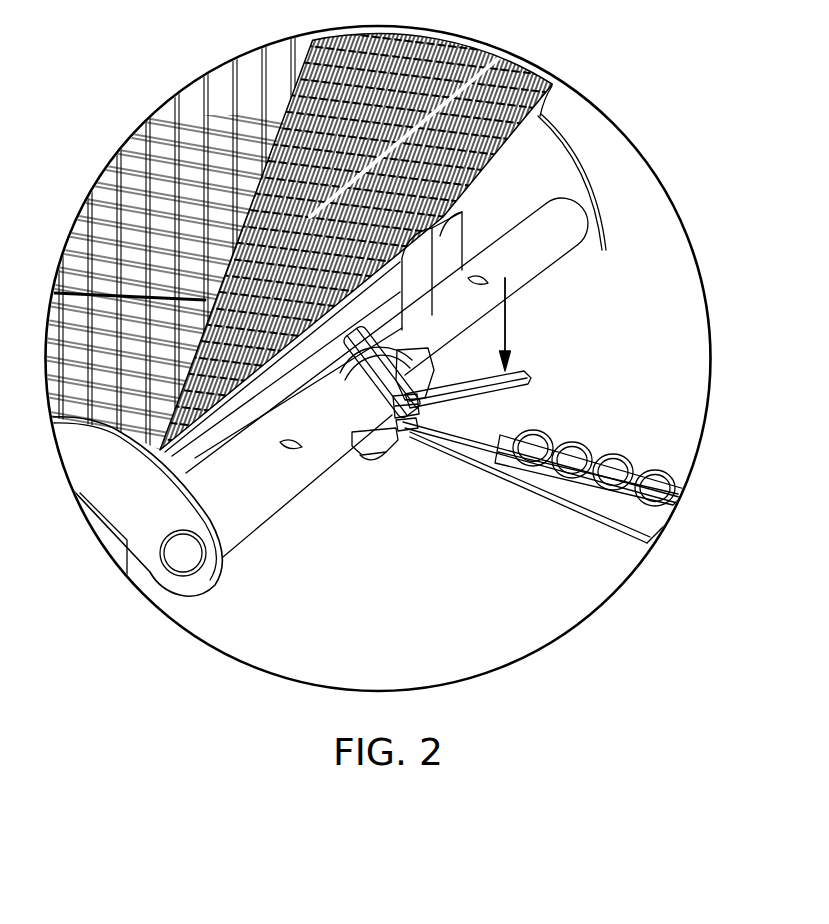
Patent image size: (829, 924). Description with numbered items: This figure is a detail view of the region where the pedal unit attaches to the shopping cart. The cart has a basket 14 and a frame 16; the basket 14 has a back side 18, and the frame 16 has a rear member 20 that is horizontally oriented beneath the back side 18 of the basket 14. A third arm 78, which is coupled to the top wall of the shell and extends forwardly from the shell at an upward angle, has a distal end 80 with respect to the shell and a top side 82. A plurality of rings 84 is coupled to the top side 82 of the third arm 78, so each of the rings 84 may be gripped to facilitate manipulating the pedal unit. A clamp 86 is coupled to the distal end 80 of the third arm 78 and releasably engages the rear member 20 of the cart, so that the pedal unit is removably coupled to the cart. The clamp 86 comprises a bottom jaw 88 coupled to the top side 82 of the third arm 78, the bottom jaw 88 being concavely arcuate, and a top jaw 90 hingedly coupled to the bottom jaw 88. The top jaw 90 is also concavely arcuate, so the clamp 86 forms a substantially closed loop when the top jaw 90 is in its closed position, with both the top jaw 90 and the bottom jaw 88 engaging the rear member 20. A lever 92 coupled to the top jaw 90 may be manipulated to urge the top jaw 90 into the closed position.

The basket 14 is at (543, 108).
The frame 16 is at (598, 197).
The back side 18 is at (535, 66).
The rear member 20 is at (530, 264).
The third arm 78 is at (537, 503).
The distal end 80 is at (358, 437).
The top side 82 is at (487, 450).
The rings 84 is at (655, 464).
The clamp 86 is at (410, 442).
The bottom jaw 88 is at (388, 418).
The top jaw 90 is at (398, 353).
The lever 92 is at (530, 377).